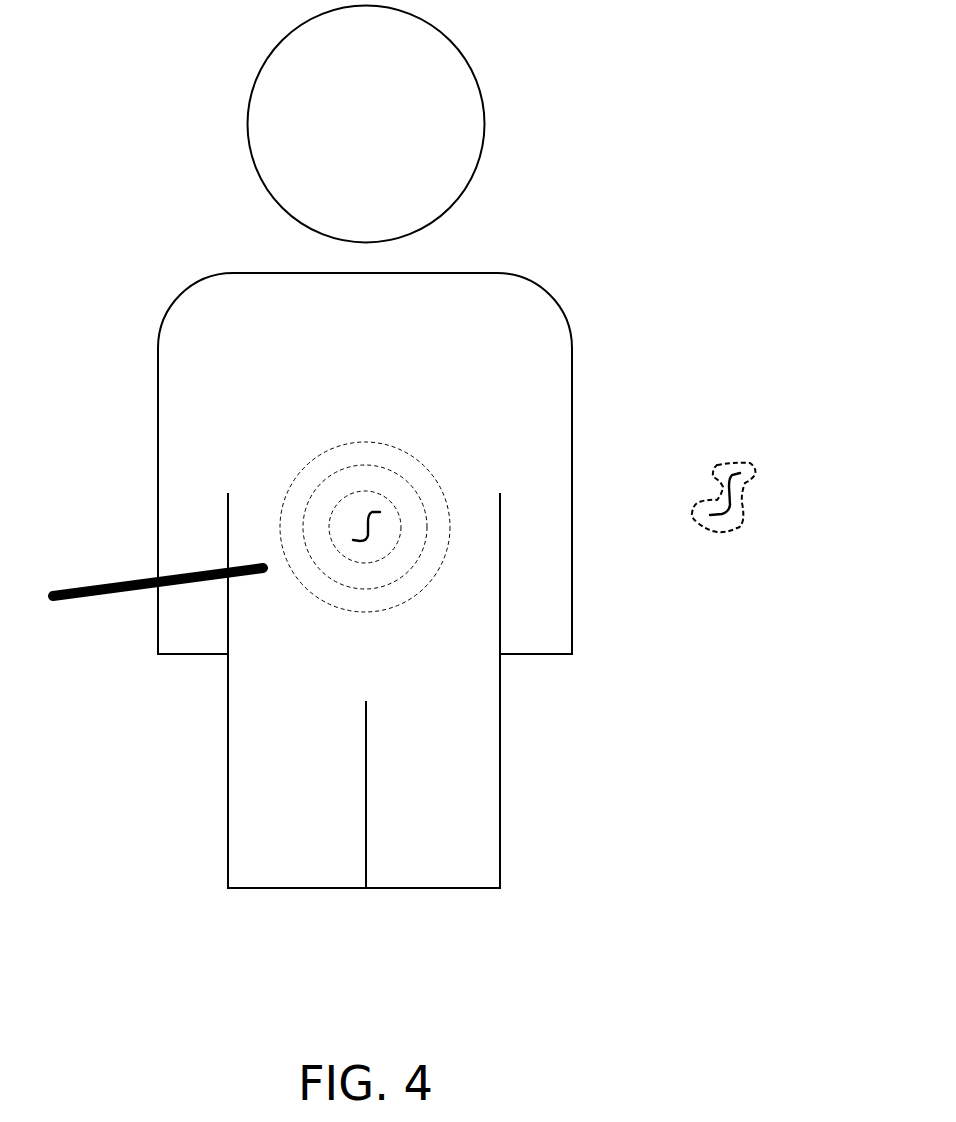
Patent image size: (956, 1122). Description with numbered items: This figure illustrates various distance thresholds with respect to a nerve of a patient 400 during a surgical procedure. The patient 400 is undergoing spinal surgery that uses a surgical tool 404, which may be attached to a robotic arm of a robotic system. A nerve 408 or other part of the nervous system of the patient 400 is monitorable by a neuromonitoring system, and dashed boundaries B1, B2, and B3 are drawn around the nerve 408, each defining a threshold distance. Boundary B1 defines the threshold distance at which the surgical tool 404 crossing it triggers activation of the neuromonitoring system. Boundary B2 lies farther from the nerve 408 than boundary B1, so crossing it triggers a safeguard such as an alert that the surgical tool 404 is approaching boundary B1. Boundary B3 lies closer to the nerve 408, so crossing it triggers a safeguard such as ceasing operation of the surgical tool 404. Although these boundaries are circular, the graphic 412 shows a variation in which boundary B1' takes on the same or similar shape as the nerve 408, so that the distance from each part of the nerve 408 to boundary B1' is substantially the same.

The patient 400 is at (177, 301).
The surgical tool 404 is at (121, 577).
The nerve 408 is at (375, 527).
The graphic 412 is at (731, 421).
The boundary B1 is at (425, 507).
The boundary B2 is at (407, 452).
The boundary B3 is at (376, 490).
The boundary B1' is at (761, 471).